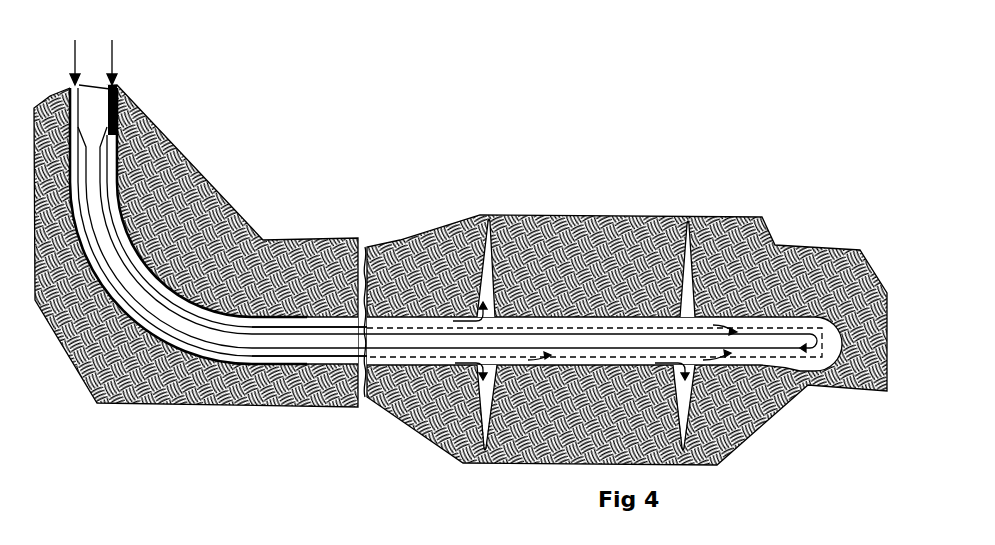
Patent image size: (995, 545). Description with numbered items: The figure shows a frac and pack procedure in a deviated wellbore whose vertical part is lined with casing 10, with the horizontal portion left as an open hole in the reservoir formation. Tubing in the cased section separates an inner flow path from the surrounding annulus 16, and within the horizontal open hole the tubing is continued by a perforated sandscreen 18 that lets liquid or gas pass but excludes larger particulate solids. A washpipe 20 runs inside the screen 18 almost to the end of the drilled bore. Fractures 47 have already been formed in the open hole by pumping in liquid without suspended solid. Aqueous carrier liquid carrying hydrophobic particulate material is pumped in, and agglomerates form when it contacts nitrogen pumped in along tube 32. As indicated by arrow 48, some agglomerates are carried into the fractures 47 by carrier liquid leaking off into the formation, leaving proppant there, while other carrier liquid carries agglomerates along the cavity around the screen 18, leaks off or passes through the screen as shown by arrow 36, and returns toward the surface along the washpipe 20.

The casing 10 is at (227, 307).
The annulus 16 is at (110, 212).
The sandscreen 18 is at (754, 326).
The washpipe 20 is at (383, 338).
The tube 32 is at (113, 80).
The arrow 36 is at (627, 331).
The fractures 47 is at (489, 228).
The arrow 48 is at (463, 320).